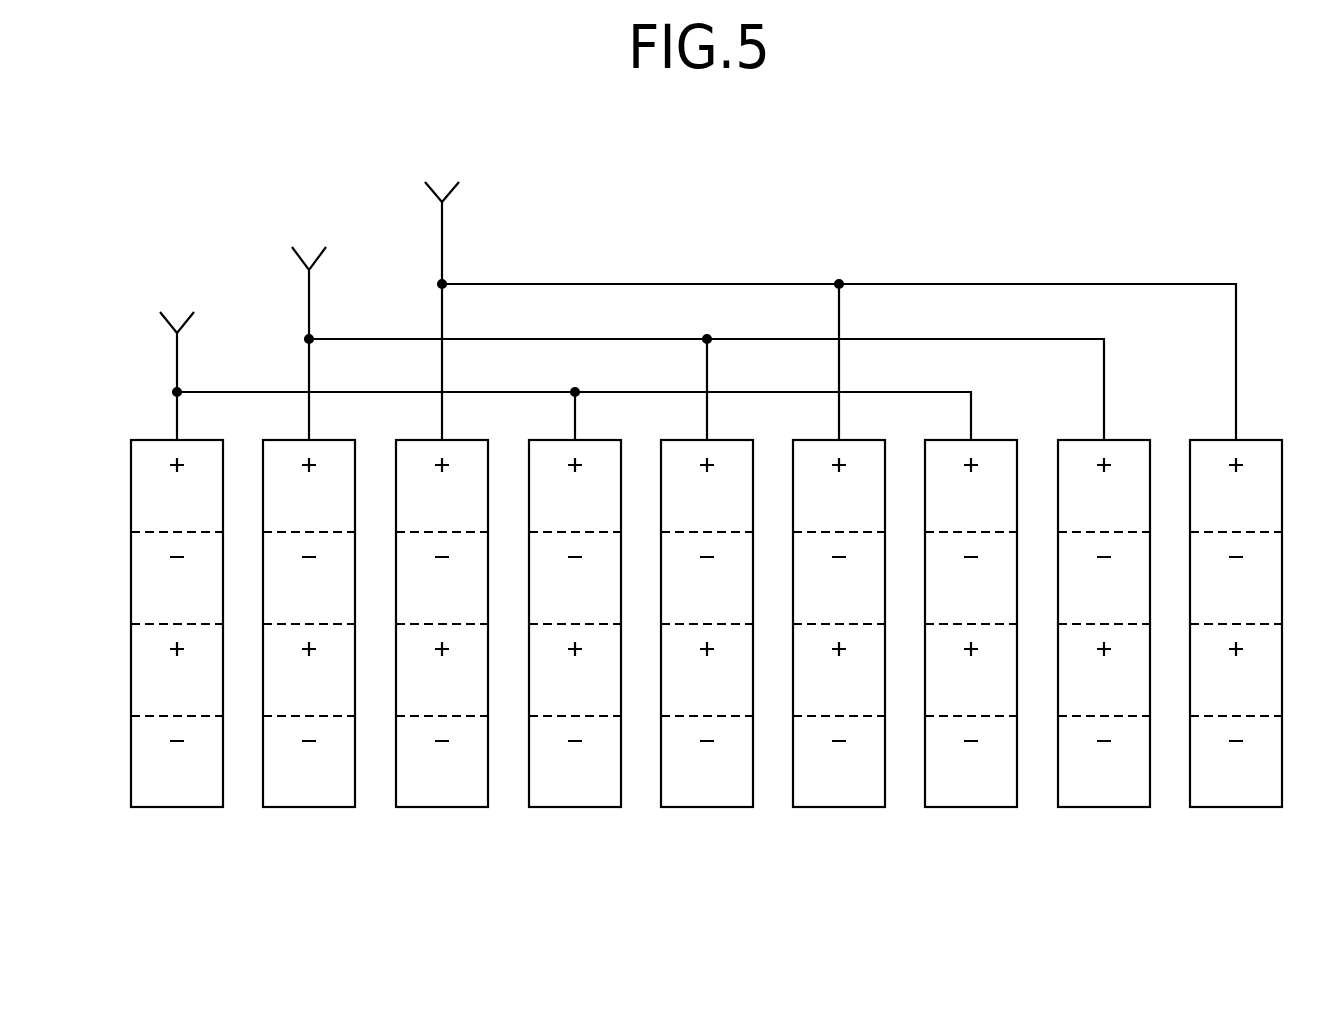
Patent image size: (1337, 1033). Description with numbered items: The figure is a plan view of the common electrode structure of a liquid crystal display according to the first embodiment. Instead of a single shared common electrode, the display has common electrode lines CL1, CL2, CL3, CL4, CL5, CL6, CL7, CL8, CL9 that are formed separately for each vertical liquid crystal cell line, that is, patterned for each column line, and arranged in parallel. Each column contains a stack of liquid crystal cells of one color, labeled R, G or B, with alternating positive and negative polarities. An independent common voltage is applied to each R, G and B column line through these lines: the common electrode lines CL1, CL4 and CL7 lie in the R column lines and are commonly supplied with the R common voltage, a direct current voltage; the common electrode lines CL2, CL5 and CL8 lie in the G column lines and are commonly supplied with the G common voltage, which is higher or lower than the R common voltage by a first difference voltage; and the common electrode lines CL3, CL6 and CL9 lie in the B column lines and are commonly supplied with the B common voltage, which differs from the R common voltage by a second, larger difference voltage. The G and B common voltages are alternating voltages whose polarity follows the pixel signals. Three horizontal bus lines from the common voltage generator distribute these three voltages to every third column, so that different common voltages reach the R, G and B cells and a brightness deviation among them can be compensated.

The common electrode line CL1 is at (179, 807).
The common electrode line CL2 is at (311, 807).
The common electrode line CL3 is at (444, 807).
The common electrode line CL4 is at (577, 807).
The common electrode line CL5 is at (709, 807).
The common electrode line CL6 is at (841, 807).
The common electrode line CL7 is at (973, 807).
The common electrode line CL8 is at (1106, 807).
The common electrode line CL9 is at (1238, 807).